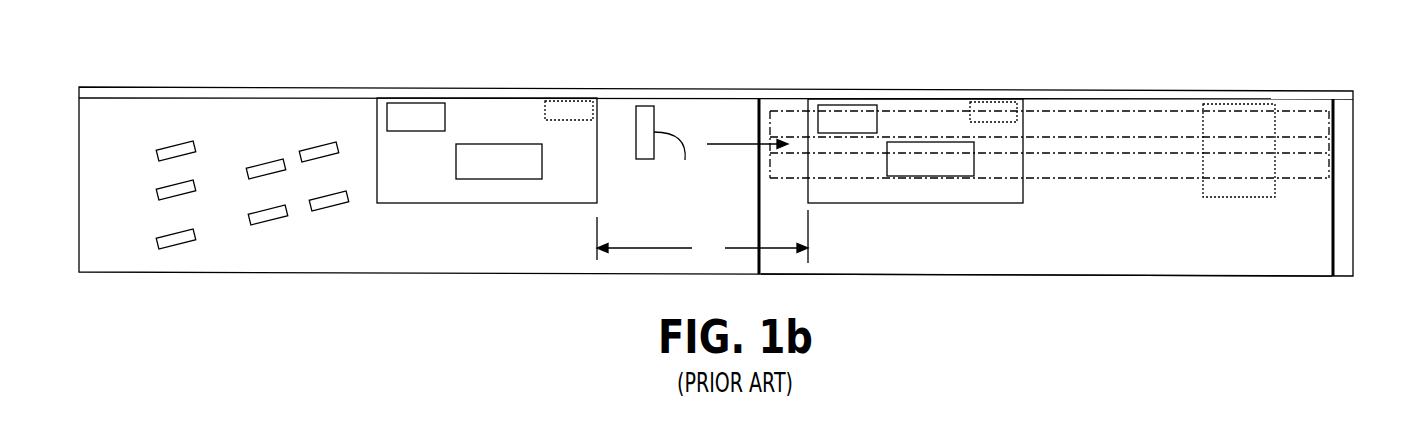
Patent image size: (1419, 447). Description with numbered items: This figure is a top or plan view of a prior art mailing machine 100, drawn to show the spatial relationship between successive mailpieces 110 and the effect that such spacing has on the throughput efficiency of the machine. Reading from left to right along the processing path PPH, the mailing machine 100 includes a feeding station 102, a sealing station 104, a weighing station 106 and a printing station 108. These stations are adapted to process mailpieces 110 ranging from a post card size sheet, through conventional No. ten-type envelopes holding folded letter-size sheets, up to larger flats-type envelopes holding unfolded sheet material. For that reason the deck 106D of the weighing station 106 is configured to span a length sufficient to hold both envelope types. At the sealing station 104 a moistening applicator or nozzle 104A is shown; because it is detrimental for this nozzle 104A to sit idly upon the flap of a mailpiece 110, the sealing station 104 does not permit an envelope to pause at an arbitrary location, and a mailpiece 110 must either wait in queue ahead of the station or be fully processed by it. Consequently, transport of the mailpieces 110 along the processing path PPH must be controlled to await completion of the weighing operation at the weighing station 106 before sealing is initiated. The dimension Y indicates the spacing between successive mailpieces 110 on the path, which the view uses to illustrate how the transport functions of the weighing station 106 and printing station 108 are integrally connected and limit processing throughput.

The mailing machine 100 is at (392, 50).
The feeding station 102 is at (206, 104).
The sealing station 104 is at (613, 102).
The moistening applicator or nozzle 104A is at (678, 166).
The weighing station 106 is at (931, 109).
The deck of the weighing station 106D is at (1087, 260).
The printing station 108 is at (1188, 118).
The mailpieces 110 is at (523, 203).
The processing path PPH is at (730, 142).
The spacing between mailpieces Y is at (702, 236).